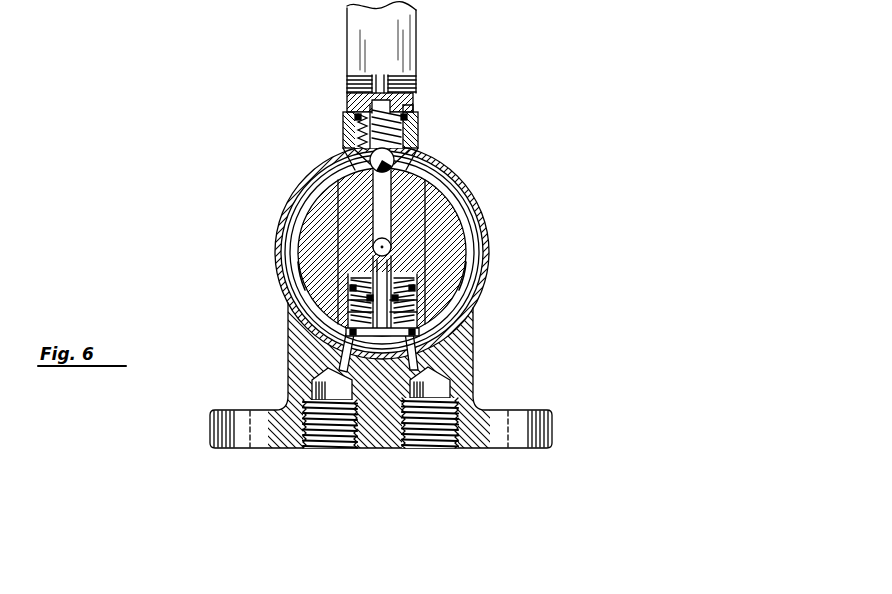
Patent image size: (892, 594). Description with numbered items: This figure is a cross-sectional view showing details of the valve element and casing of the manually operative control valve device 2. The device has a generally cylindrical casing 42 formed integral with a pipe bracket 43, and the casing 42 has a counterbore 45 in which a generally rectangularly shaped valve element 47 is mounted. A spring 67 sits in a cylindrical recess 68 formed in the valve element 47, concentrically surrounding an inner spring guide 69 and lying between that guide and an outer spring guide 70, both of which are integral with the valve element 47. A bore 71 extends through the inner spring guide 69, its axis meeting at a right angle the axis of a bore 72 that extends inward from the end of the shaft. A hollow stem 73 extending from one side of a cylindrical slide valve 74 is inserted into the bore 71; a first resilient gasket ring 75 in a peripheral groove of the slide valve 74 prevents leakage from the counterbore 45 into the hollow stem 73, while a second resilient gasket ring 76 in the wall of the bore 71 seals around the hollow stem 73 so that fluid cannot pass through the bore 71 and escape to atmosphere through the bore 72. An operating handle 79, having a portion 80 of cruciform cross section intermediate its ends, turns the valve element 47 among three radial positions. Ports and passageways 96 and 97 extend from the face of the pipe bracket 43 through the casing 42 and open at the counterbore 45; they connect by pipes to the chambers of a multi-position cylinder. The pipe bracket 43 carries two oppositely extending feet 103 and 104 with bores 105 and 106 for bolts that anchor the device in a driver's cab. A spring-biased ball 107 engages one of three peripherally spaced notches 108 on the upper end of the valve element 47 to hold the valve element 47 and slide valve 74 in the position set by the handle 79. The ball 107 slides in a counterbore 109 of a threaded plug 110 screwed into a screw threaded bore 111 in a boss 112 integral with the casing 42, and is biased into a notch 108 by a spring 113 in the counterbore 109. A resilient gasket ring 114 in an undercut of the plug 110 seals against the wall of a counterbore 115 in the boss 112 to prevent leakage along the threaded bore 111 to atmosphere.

The manually operative control valve device 2 is at (276, 232).
The casing 42 is at (470, 258).
The pipe bracket 43 is at (283, 440).
The counterbore 45 is at (455, 215).
The valve element 47 is at (342, 216).
The spring 67 is at (412, 310).
The cylindrical recess 68 is at (462, 274).
The inner spring guide 69 is at (342, 272).
The outer spring guide 70 is at (345, 300).
The bore 71 is at (346, 256).
The bore 72 is at (392, 247).
The hollow stem 73 is at (352, 283).
The cylindrical slide valve 74 is at (350, 322).
The first resilient gasket ring 75 is at (420, 325).
The second resilient gasket ring 76 is at (410, 290).
The operating handle 79 is at (388, 44).
The cruciform portion 80 is at (416, 84).
The port and passageway 96 is at (414, 345).
The port and passageway 97 is at (346, 347).
The foot 103 is at (547, 437).
The foot 104 is at (214, 437).
The bore 105 is at (550, 422).
The bore 106 is at (212, 422).
The spring-biased ball 107 is at (396, 158).
The notches 108 is at (345, 160).
The counterbore 109 is at (406, 128).
The threaded plug 110 is at (352, 90).
The screw threaded bore 111 is at (352, 141).
The boss 112 is at (358, 127).
The spring 113 is at (405, 139).
The resilient gasket ring 114 is at (356, 116).
The counterbore 115 is at (410, 110).